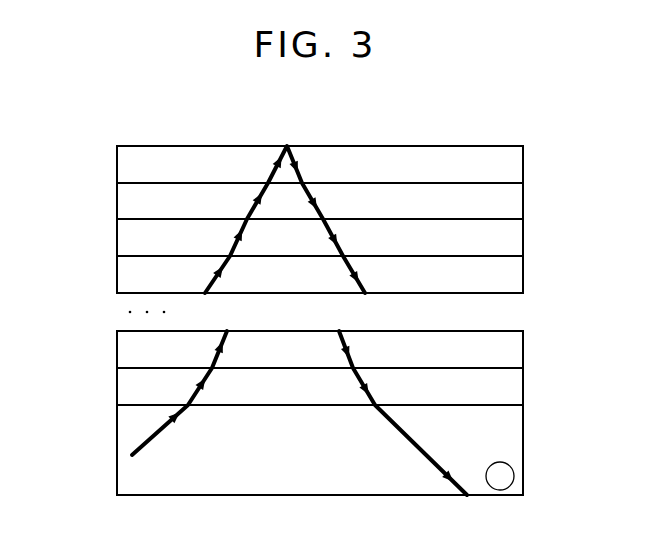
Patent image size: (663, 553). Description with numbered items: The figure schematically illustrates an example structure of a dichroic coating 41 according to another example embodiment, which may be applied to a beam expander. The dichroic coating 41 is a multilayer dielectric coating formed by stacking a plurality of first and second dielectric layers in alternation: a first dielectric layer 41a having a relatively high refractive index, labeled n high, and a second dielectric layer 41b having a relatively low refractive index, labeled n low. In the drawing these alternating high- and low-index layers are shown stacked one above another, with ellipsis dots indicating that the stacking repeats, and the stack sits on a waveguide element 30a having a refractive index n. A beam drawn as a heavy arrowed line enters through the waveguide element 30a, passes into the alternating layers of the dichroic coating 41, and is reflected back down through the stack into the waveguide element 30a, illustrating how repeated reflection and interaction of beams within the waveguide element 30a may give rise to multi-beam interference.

The dichroic coating 41 is at (313, 320).
The first dielectric layer 41a is at (117, 164).
The second dielectric layer 41b is at (117, 206).
The waveguide element 30a is at (117, 452).